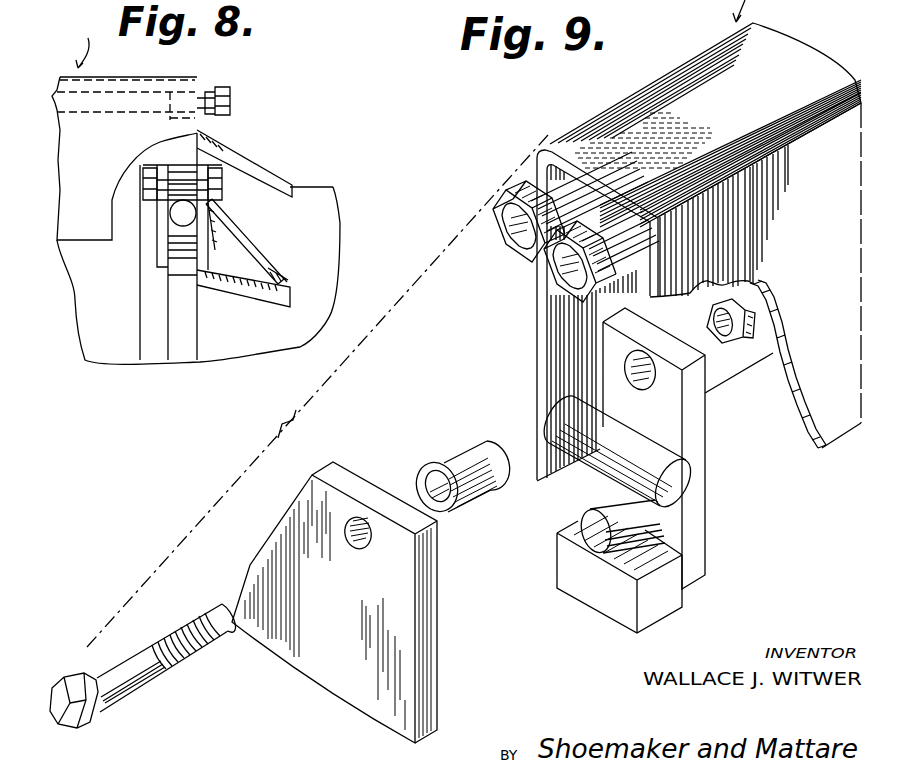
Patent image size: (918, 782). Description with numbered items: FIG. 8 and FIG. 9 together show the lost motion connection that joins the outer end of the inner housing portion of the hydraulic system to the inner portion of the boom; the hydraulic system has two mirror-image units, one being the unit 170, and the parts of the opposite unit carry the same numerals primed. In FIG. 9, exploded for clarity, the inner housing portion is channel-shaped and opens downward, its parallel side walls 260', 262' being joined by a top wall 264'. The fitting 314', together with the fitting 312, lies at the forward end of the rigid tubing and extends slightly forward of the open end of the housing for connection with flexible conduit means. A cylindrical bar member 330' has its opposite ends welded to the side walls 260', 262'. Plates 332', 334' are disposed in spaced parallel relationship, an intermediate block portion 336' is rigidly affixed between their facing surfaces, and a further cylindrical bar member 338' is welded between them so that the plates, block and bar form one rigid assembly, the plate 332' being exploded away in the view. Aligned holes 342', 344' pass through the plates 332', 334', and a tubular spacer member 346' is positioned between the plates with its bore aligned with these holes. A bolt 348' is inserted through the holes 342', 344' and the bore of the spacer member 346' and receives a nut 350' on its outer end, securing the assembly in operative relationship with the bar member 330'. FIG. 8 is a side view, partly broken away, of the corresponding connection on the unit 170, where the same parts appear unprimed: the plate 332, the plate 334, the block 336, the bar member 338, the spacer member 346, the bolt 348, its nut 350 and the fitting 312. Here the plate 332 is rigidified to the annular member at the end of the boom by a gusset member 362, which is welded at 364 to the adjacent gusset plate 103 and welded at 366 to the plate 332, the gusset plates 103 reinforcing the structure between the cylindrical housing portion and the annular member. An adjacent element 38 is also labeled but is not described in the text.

In FIG. 8, the hydraulic system unit 170 is at (78, 43).
In FIG. 8, the nut 350 is at (196, 220).
In FIG. 8, the fitting 312 is at (232, 97).
In FIG. 9, the fitting 312 is at (603, 267).
In FIG. 8, the spacer member 346 is at (217, 154).
In FIG. 8, the plate 332 is at (226, 246).
In FIG. 8, the gusset plate 103 is at (248, 288).
In FIG. 8, the wall 38 is at (330, 195).
In FIG. 8, the bolt 348 is at (201, 182).
In FIG. 8, the weld 366 is at (222, 228).
In FIG. 8, the gusset member 362 is at (253, 247).
In FIG. 8, the weld 364 is at (272, 280).
In FIG. 8, the plate 334 is at (134, 262).
In FIG. 8, the cylindrical bar member 338 is at (149, 271).
In FIG. 8, the intermediate block portion 336 is at (149, 295).
In FIG. 9, the fitting 314' is at (551, 207).
In FIG. 9, the top wall 264' is at (705, 235).
In FIG. 9, the side wall 262' is at (564, 315).
In FIG. 9, the spacer member 346' is at (460, 463).
In FIG. 9, the hole 344' is at (646, 386).
In FIG. 9, the nut 350' is at (712, 344).
In FIG. 9, the side wall 260' is at (799, 364).
In FIG. 9, the cylindrical bar member 330' is at (653, 454).
In FIG. 9, the plate 334' is at (685, 449).
In FIG. 9, the cylindrical bar member 338' is at (617, 544).
In FIG. 9, the intermediate block portion 336' is at (641, 576).
In FIG. 9, the hole 342' is at (362, 553).
In FIG. 9, the plate 332' is at (364, 602).
In FIG. 9, the bolt 348' is at (143, 666).